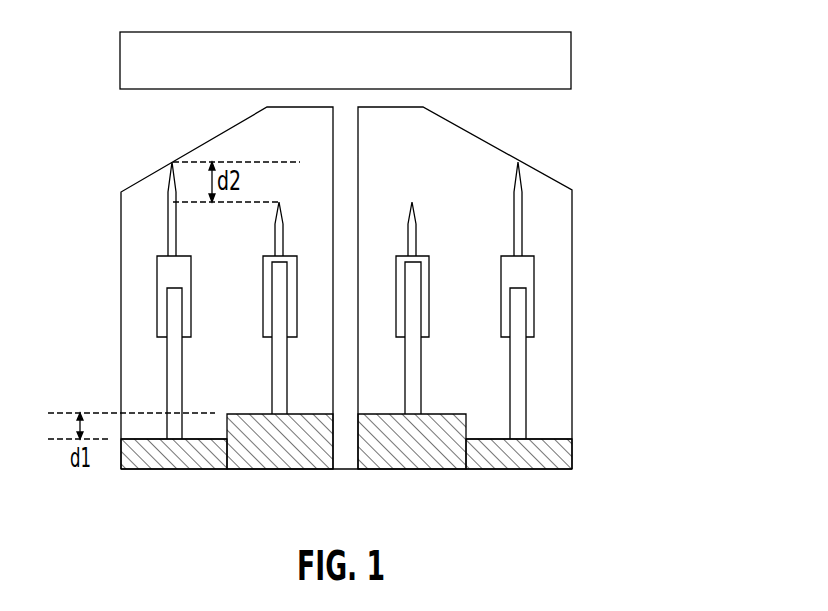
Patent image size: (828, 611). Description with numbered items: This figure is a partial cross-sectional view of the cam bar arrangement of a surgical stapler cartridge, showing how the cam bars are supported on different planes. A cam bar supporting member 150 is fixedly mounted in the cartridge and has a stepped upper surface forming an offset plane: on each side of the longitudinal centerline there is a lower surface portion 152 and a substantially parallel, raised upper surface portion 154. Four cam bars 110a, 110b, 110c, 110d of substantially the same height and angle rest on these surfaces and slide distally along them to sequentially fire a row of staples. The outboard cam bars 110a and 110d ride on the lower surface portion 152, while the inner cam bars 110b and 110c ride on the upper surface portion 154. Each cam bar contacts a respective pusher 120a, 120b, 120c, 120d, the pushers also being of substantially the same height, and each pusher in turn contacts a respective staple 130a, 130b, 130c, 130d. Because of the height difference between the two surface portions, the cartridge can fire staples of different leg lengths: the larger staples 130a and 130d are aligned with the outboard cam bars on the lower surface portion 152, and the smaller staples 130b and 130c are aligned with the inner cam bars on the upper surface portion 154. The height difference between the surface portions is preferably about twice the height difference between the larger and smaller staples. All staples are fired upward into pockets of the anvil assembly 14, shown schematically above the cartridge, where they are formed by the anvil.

The anvil assembly 14 is at (571, 60).
The cam bar 110a is at (170, 355).
The cam bar 110b is at (276, 389).
The cam bar 110c is at (413, 388).
The cam bar 110d is at (522, 353).
The pusher 120a is at (165, 277).
The pusher 120b is at (272, 329).
The pusher 120c is at (422, 328).
The pusher 120d is at (528, 277).
The staple 130a is at (168, 222).
The staple 130b is at (275, 247).
The staple 130c is at (417, 248).
The staple 130d is at (523, 221).
The cam bar supporting member 150 is at (341, 477).
The lower surface portion 152 is at (152, 443).
The upper surface portion 154 is at (250, 415).